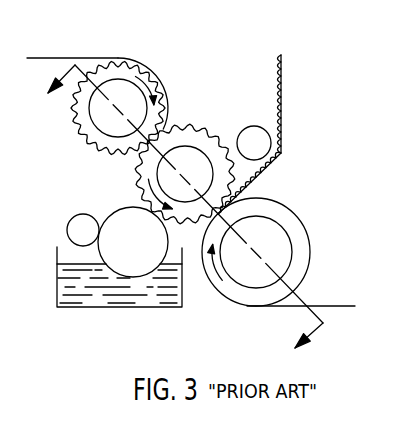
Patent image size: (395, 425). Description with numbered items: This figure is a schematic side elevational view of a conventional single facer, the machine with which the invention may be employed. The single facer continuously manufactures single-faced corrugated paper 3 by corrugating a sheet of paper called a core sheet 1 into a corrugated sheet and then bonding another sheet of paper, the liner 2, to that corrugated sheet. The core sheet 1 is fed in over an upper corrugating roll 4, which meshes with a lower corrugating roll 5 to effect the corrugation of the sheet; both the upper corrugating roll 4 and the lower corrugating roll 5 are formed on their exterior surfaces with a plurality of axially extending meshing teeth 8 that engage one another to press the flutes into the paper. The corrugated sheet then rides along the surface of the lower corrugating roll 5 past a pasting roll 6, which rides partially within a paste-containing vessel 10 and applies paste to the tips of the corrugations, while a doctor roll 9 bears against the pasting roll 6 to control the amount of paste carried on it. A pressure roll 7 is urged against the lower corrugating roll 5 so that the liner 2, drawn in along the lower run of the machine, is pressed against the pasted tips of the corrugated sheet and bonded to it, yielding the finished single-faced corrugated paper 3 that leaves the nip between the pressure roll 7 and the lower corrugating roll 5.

The core sheet 1 is at (52, 58).
The liner 2 is at (332, 306).
The single-faced corrugated paper 3 is at (282, 88).
The upper corrugating roll 4 is at (83, 113).
The lower corrugating roll 5 is at (197, 133).
The pasting roll 6 is at (82, 227).
The pressure roll 7 is at (297, 237).
The meshing teeth 8 is at (228, 139).
The doctor roll 9 is at (122, 232).
The paste-containing vessel 10 is at (150, 298).